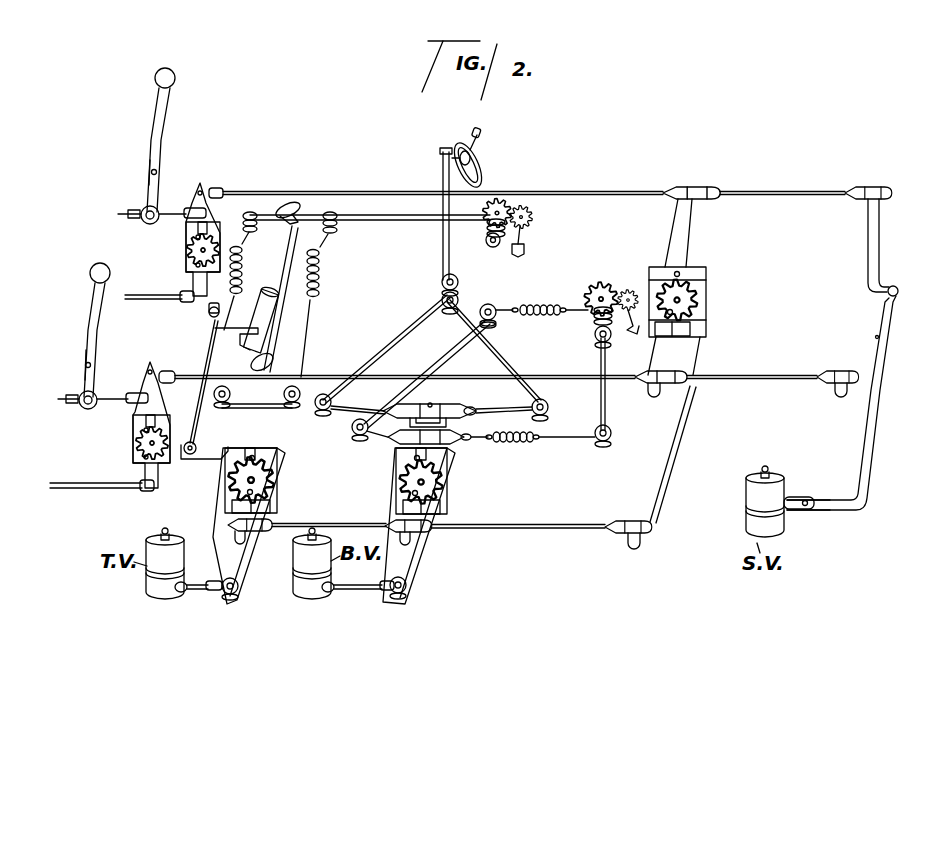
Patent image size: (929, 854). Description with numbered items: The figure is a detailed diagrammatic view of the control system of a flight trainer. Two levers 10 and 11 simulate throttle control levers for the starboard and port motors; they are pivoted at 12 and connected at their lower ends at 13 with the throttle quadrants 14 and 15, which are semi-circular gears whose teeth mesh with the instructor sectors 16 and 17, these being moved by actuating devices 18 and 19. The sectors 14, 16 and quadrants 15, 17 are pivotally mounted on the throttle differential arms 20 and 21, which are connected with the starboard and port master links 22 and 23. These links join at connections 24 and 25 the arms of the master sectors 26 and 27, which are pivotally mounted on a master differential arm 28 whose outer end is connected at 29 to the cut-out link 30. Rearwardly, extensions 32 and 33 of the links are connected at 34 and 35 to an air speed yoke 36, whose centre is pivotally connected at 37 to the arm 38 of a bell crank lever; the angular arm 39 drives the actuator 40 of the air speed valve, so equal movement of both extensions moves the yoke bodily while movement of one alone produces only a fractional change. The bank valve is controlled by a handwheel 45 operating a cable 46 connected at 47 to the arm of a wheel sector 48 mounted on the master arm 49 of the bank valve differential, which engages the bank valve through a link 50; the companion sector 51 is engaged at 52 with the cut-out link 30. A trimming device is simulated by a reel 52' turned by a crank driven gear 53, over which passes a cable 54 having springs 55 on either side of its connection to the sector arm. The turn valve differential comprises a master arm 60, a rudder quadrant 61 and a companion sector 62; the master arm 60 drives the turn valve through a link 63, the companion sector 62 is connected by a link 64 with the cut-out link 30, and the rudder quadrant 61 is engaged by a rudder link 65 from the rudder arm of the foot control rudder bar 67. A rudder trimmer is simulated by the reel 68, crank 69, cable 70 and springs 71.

The lever 10 is at (168, 108).
The lever 11 is at (98, 322).
The pivot 12 is at (158, 172).
The lower-end connection 13 is at (147, 223).
The starboard throttle quadrant 14 is at (186, 244).
The port throttle quadrant 15 is at (132, 433).
The instructor sector 16 is at (186, 268).
The instructor sector 17 is at (132, 457).
The actuating device 18 is at (155, 303).
The actuating device 19 is at (88, 490).
The throttle differential arm 20 is at (208, 186).
The throttle differential arm 21 is at (145, 386).
The starboard master link 22 is at (320, 191).
The port master link 23 is at (323, 374).
The connection 24 is at (692, 181).
The connection 25 is at (672, 385).
The master sector 26 is at (706, 270).
The master sector 27 is at (690, 310).
The master differential arm 28 is at (670, 450).
The connection 29 is at (640, 540).
The cut-out link 30 is at (523, 532).
The starboard extension 32 is at (768, 191).
The port extension 33 is at (736, 375).
The connection 34 is at (870, 187).
The connection 35 is at (834, 386).
The air speed yoke 36 is at (866, 243).
The pivotal connection 37 is at (886, 291).
The bell crank arm 38 is at (870, 434).
The bell crank arm 39 is at (826, 512).
The actuator 40 is at (794, 495).
The handwheel 45 is at (479, 143).
The cable 46 is at (441, 256).
The connection 47 is at (448, 401).
The wheel sector 48 is at (424, 458).
The master arm 49 is at (412, 566).
The link 50 is at (350, 592).
The companion sector 51 is at (433, 491).
The engagement 52 is at (435, 522).
The reel 52' is at (590, 303).
The crank driven gear 53 is at (631, 290).
The cable 54 is at (428, 358).
The springs 55 is at (542, 314).
The master arm 60 is at (284, 487).
The rudder quadrant 61 is at (256, 455).
The companion sector 62 is at (235, 494).
The link 63 is at (193, 592).
The link 64 is at (321, 523).
The rudder link 65 is at (207, 356).
The foot control rudder bar 67 is at (283, 266).
The reel 68 is at (490, 248).
The crank 69 is at (524, 234).
The cable 70 is at (372, 219).
The springs 71 is at (240, 268).